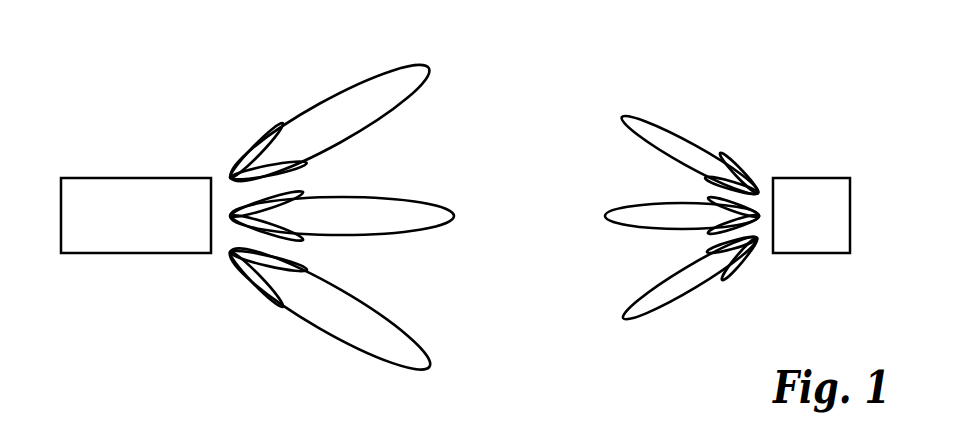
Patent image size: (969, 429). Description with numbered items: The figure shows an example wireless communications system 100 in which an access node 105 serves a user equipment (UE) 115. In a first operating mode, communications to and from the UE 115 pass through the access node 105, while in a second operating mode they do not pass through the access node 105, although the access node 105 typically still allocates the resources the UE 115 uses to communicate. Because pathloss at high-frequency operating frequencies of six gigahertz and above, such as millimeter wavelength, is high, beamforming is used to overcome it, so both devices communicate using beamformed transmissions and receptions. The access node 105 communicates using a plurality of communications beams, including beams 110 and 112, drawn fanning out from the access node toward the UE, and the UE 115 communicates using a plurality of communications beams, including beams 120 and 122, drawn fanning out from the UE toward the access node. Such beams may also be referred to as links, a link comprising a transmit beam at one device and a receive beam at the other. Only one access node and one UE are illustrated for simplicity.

The wireless communications system 100 is at (778, 54).
The access node 105 is at (80, 177).
The beam 110 is at (381, 197).
The beam 112 is at (382, 73).
The user equipment (UE) 115 is at (830, 177).
The beam 120 is at (641, 204).
The beam 122 is at (664, 122).